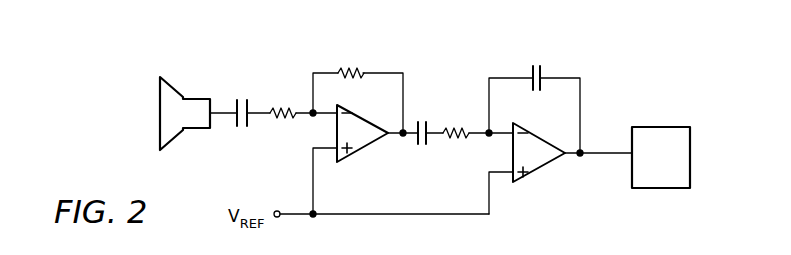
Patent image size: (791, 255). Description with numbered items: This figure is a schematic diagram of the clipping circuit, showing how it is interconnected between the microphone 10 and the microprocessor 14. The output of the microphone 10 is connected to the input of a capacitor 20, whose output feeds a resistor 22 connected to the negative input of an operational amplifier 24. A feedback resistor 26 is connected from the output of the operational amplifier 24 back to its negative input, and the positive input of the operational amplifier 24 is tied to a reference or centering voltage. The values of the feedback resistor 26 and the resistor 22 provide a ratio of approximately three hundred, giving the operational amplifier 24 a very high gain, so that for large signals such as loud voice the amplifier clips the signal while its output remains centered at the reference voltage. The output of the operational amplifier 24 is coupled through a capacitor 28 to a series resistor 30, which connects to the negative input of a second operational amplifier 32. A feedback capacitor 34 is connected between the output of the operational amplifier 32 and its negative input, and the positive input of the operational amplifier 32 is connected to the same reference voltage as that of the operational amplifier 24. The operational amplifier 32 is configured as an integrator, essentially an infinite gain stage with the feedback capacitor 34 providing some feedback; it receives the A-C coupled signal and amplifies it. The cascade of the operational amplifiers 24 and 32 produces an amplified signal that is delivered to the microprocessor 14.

The microphone 10 is at (160, 112).
The microprocessor 14 is at (655, 188).
The capacitor 20 is at (238, 100).
The resistor 22 is at (284, 108).
The operational amplifier 24 is at (352, 152).
The feedback resistor 26 is at (347, 70).
The capacitor 28 is at (428, 128).
The series resistor 30 is at (467, 137).
The operational amplifier 32 is at (540, 168).
The feedback capacitor 34 is at (543, 67).